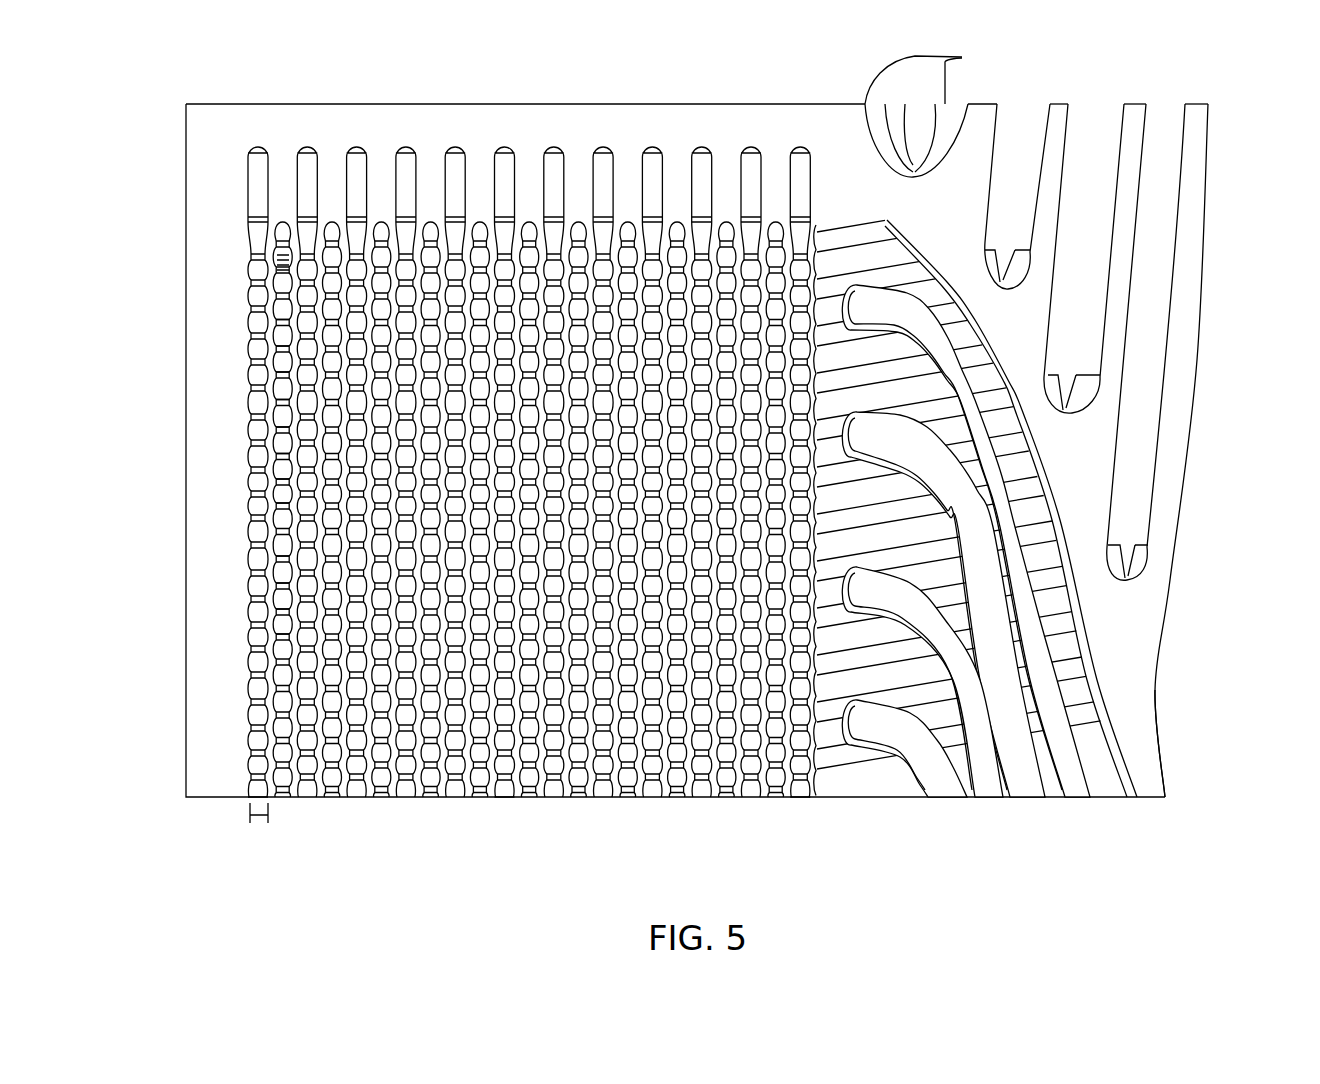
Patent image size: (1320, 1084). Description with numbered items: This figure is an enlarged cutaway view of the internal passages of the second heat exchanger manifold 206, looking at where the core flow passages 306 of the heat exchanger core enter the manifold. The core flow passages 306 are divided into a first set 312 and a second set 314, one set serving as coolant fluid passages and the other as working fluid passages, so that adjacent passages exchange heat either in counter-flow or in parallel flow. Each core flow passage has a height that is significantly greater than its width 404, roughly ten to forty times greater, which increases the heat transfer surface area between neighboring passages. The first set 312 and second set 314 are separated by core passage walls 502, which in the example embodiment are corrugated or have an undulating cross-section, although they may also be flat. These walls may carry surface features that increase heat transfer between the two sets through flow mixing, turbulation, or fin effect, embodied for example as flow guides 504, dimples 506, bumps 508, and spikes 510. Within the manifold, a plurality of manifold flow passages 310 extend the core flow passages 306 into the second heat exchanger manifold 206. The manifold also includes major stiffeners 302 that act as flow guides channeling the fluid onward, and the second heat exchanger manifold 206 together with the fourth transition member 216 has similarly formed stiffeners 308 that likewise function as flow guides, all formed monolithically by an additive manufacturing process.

The second heat exchanger manifold 206 is at (1160, 657).
The fourth transition member 216 is at (1165, 780).
The major stiffeners 302 is at (1196, 104).
The core flow passages 306 is at (800, 841).
The stiffeners 308 is at (1130, 797).
The manifold flow passages 310 is at (1140, 547).
The first set of core flow passages 312 is at (504, 150).
The second set of core flow passages 314 is at (480, 797).
The width 404 is at (258, 818).
The core passage walls 502 is at (268, 797).
The flow guides 504 is at (283, 265).
The dimples 506 is at (282, 386).
The bumps 508 is at (282, 510).
The spikes 510 is at (282, 605).